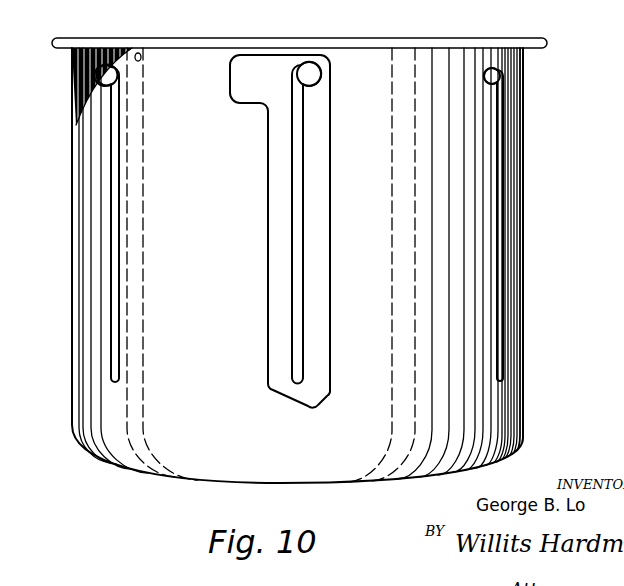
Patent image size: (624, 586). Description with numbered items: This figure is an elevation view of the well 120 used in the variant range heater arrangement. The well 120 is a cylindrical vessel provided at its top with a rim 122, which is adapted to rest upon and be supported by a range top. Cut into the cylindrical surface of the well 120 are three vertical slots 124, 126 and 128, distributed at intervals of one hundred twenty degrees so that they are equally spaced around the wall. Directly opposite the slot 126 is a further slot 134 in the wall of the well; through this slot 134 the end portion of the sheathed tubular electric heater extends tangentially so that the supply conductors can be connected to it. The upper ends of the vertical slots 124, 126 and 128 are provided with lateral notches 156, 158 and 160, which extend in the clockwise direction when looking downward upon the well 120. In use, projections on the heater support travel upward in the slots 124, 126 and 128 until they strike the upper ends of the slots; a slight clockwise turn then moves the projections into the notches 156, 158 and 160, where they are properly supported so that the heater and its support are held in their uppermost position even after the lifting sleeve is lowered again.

The well 120 is at (582, 222).
The rim 122 is at (547, 44).
The vertical slot 124 is at (120, 237).
The vertical slot 126 is at (302, 283).
The vertical slot 128 is at (505, 305).
The slot 134 is at (329, 188).
The lateral notch 156 is at (102, 80).
The lateral notch 158 is at (318, 72).
The lateral notch 160 is at (497, 75).